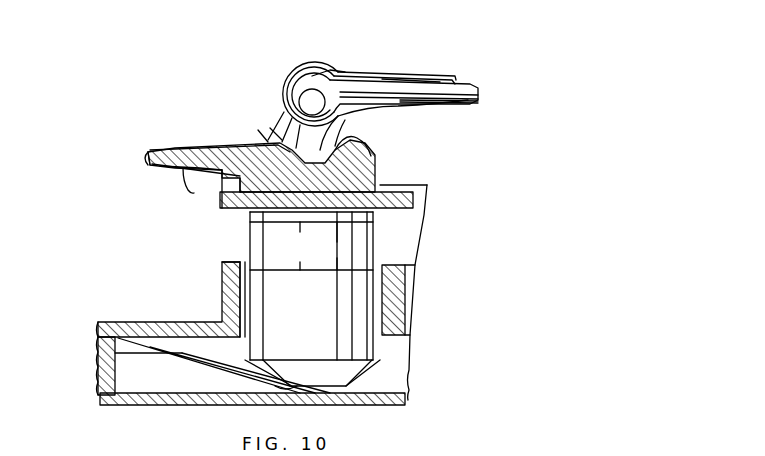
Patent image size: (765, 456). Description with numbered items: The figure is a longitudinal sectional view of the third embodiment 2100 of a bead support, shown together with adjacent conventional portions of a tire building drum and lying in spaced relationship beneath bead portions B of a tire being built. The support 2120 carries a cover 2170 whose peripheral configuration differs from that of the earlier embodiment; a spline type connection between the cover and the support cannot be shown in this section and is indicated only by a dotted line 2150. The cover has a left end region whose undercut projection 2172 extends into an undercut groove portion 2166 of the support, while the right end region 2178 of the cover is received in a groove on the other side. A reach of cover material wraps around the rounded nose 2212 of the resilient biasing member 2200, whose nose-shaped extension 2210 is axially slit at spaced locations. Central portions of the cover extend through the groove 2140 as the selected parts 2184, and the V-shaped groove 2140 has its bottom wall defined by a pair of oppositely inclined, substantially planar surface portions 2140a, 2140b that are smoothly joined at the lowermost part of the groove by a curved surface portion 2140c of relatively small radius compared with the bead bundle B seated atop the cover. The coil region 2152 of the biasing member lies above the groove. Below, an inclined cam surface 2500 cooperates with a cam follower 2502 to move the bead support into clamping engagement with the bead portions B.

The third embodiment 2100 is at (240, 85).
The spring member 2200 is at (313, 150).
The bead portions B is at (380, 78).
The selected parts of the central portions of the cover 2184 is at (322, 78).
The spring coil portion 2152 is at (292, 84).
The cover 2170 is at (190, 132).
The dotted line indicating spline type connection 2150 is at (262, 124).
The inclined planar surface portion 2140a is at (268, 131).
The V-shaped groove 2140 is at (414, 115).
The inclined planar surface portion 2140b is at (375, 144).
The rounded nose 2212 is at (152, 159).
The right end region of the cover 2178 is at (376, 176).
The nose-shaped extension of the biasing means 2210 is at (176, 194).
The undercut projection 2172 is at (223, 207).
The undercut groove portion 2166 is at (225, 214).
The curved surface portion 2140c is at (252, 234).
The support 2120 is at (217, 248).
The inclined cam surface 2500 is at (198, 356).
The cam follower 2502 is at (317, 403).